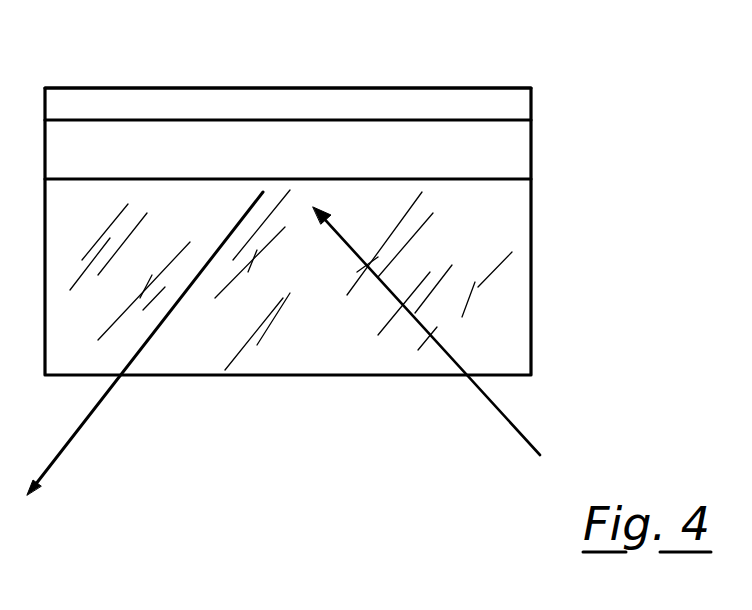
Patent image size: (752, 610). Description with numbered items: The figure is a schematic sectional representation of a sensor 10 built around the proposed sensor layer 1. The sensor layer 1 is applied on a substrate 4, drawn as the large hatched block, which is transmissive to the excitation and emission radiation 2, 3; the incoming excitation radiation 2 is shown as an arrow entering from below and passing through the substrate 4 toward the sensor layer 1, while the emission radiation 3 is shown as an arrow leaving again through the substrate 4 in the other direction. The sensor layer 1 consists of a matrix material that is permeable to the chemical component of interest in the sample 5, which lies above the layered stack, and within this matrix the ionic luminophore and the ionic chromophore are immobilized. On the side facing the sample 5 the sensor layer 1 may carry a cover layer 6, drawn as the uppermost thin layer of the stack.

The sensor layer 1 is at (531, 147).
The excitation radiation 2 is at (502, 413).
The emission radiation 3 is at (82, 425).
The substrate 4 is at (480, 248).
The sample 5 is at (237, 57).
The cover layer 6 is at (432, 98).
The sensor 10 is at (340, 255).